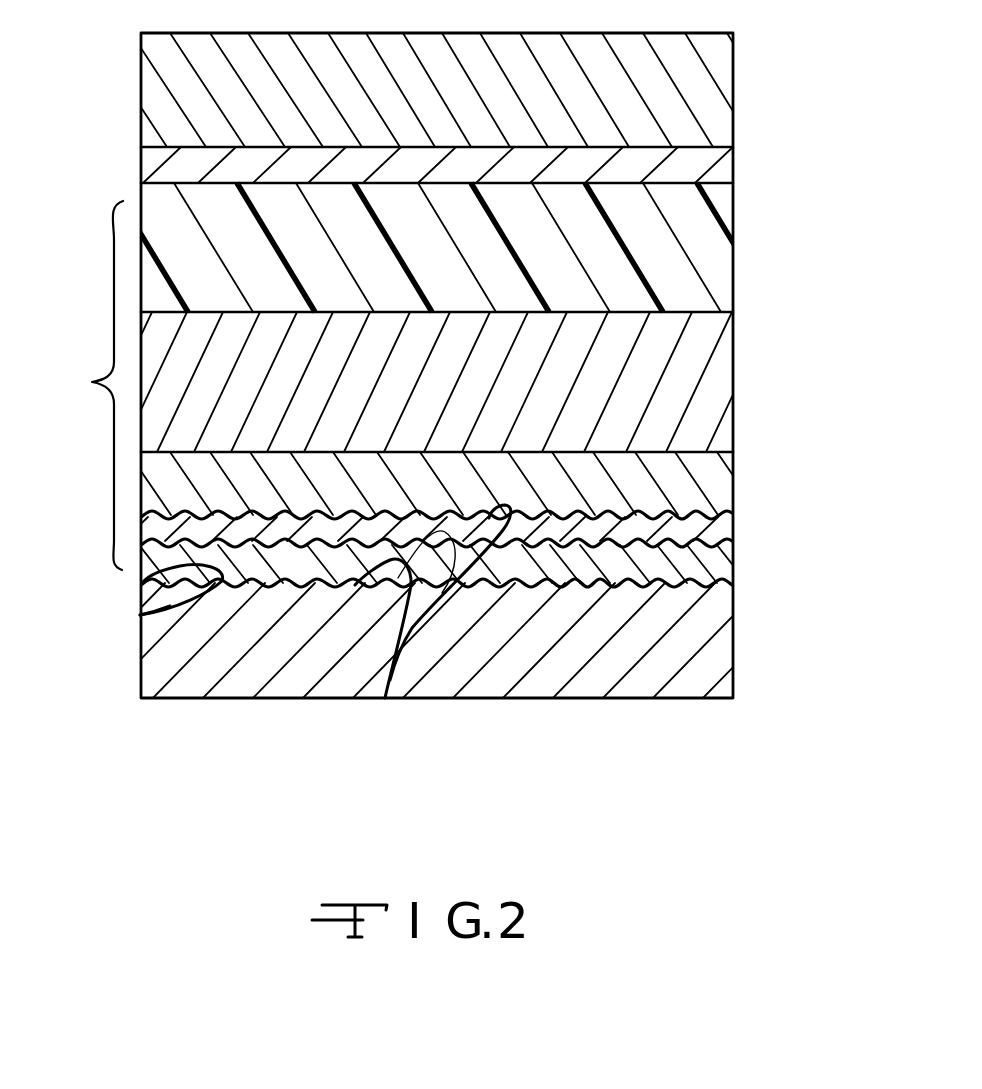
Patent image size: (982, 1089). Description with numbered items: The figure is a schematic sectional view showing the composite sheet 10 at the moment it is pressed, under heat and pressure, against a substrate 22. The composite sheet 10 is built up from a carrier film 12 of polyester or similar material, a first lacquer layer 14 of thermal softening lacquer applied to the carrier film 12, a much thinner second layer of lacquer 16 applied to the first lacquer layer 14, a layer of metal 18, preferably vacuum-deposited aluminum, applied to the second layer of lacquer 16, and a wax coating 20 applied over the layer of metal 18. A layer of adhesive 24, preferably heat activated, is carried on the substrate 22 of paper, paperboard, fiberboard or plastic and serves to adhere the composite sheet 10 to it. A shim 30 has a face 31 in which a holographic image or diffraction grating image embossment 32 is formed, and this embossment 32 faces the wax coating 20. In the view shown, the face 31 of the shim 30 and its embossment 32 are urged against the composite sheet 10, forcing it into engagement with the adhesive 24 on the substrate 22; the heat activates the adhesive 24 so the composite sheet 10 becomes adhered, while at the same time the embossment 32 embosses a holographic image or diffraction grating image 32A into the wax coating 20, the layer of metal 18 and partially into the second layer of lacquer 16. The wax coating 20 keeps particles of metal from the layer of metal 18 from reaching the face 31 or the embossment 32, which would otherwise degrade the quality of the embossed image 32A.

The composite sheet 10 is at (85, 385).
The carrier film 12 is at (718, 253).
The first lacquer layer 14 is at (718, 372).
The second layer of lacquer 16 is at (720, 482).
The layer of metal 18 is at (722, 528).
The wax coating 20 is at (722, 558).
The substrate 22 is at (715, 90).
The layer of adhesive 24 is at (718, 172).
The shim 30 is at (720, 660).
The face 31 is at (140, 615).
The holographic image or diffraction grating image embossment 32 is at (152, 573).
The holographic image or diffraction grating image 32A is at (385, 698).